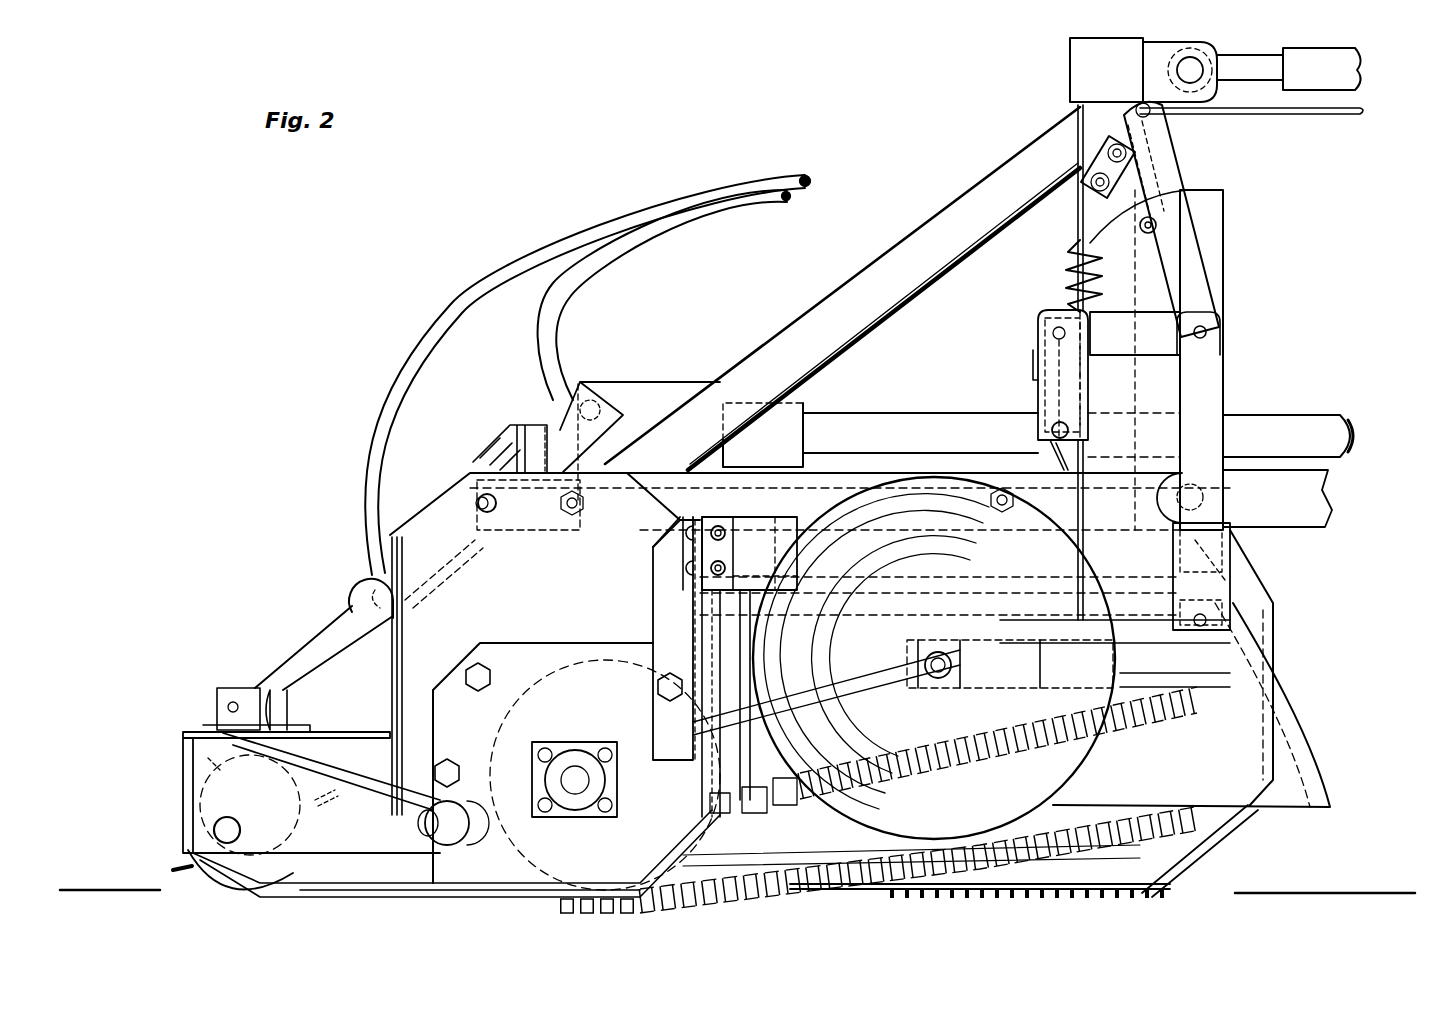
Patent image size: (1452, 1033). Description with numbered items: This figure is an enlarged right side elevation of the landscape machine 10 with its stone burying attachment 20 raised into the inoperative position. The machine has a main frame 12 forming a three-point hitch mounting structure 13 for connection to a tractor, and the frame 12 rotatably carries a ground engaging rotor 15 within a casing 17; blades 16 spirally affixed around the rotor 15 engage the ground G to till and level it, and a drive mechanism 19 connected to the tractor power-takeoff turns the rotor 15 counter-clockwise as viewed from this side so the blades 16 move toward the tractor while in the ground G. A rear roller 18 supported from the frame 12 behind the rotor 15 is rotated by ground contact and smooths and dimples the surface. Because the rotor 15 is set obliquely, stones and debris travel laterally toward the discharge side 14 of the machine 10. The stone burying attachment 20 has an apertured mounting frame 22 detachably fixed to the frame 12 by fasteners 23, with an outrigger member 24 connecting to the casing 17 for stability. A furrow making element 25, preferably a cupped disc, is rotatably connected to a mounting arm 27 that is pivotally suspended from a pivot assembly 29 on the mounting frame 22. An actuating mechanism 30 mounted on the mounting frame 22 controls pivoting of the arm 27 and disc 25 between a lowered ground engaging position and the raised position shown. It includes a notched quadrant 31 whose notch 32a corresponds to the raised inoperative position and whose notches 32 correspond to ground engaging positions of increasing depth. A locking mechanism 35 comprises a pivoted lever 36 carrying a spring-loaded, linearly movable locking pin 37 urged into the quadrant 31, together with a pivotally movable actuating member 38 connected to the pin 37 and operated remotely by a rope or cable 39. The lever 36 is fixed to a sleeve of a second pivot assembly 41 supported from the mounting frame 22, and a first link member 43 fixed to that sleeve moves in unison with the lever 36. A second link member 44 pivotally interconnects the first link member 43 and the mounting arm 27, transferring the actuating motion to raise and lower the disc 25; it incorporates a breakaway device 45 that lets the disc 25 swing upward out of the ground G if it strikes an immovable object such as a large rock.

The landscape machine 10 is at (310, 290).
The main frame 12 is at (600, 470).
The three-point hitch mounting structure 13 is at (1060, 135).
The discharge side 14 is at (305, 575).
The ground engaging rotor 15 is at (1175, 860).
The blades 16 is at (1205, 835).
The casing 17 is at (652, 620).
The rear roller 18 is at (225, 860).
The drive mechanism 19 is at (827, 403).
The stone burying attachment 20 is at (1220, 360).
The mounting frame 22 is at (830, 485).
The fasteners 23 is at (580, 510).
The outrigger member 24 is at (755, 535).
The furrow making element 25 is at (1077, 760).
The mounting arm 27 is at (1213, 690).
The pivot assembly 29 is at (1220, 600).
The actuating mechanism 30 is at (1200, 167).
The notched quadrant 31 is at (1210, 232).
The notches 32 is at (1080, 272).
The notch 32a is at (1158, 192).
The locking mechanism 35 is at (1065, 165).
The pivoted lever 36 is at (1170, 262).
The locking pin 37 is at (1155, 222).
The actuating member 38 is at (1150, 118).
The rope or cable 39 is at (1355, 106).
The second pivot assembly 41 is at (1210, 332).
The first link member 43 is at (1163, 350).
The second link member 44 is at (1038, 330).
The breakaway device 45 is at (1105, 430).
The ground G is at (1315, 893).